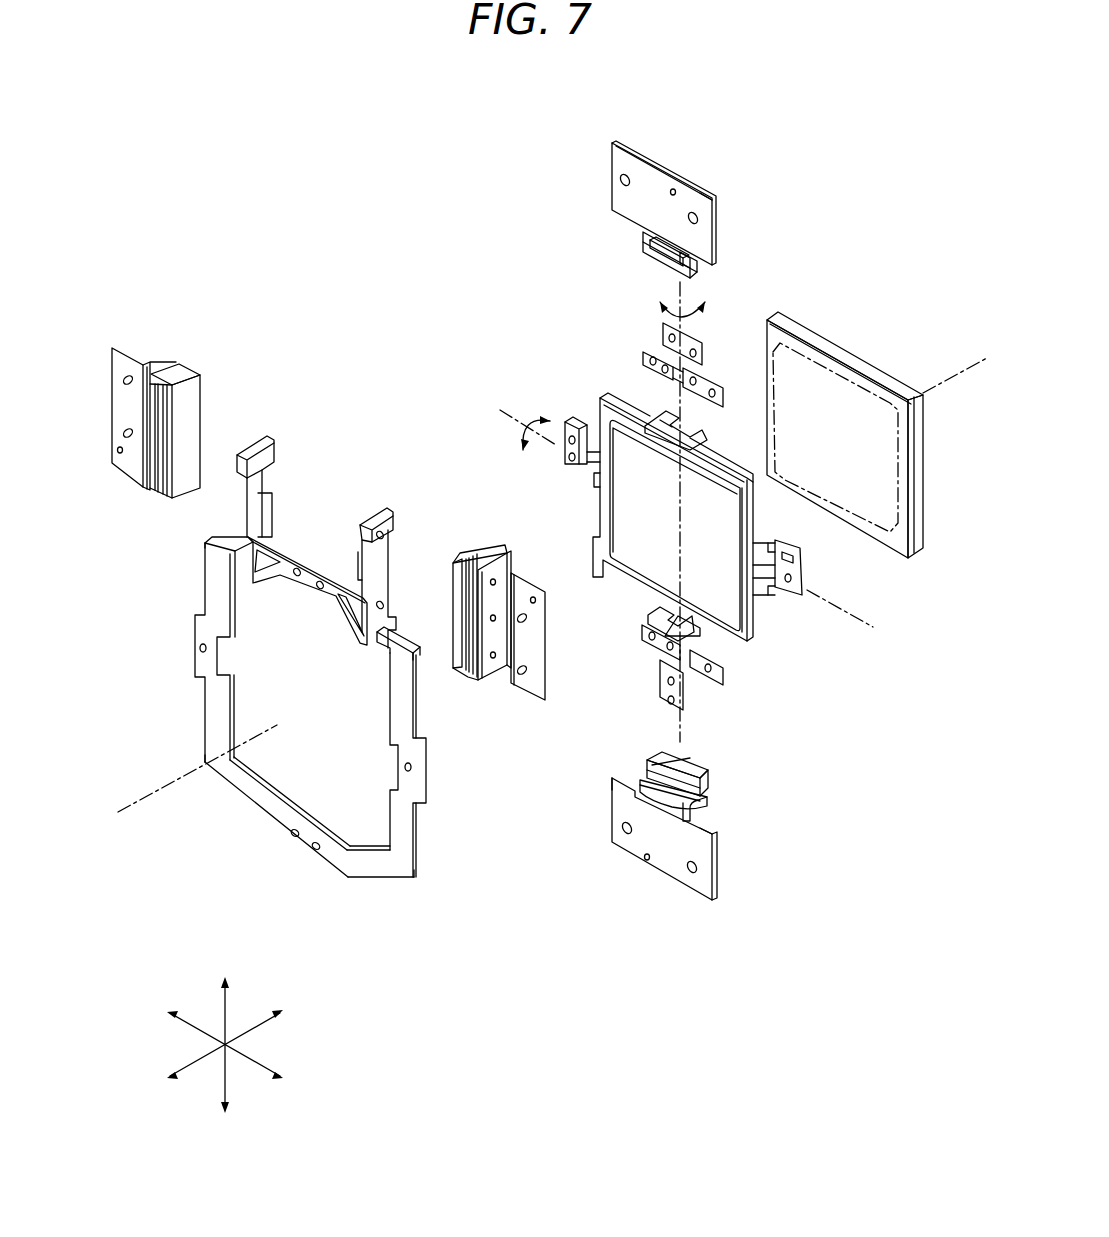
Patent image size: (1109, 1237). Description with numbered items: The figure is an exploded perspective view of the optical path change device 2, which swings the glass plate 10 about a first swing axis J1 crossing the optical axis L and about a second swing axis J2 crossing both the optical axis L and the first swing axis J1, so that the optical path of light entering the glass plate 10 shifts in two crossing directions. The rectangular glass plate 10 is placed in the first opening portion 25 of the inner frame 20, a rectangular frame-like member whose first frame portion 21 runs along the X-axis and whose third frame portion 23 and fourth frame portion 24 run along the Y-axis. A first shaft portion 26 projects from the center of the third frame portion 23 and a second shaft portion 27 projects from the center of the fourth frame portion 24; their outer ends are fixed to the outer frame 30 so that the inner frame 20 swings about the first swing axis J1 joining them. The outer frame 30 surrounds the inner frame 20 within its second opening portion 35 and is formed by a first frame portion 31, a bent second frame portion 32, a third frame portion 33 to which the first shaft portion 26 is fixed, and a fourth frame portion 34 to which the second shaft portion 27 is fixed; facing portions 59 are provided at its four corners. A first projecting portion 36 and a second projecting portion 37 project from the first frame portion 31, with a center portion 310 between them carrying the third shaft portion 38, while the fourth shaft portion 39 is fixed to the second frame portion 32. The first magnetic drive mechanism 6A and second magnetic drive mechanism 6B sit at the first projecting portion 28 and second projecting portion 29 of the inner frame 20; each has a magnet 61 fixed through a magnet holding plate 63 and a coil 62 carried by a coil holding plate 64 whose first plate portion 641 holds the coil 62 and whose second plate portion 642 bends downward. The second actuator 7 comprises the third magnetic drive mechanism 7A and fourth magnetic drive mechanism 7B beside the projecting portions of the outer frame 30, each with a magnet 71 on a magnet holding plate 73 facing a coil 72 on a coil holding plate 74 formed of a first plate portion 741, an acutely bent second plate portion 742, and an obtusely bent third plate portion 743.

The optical path change device 2 is at (362, 160).
The second actuator 7 is at (368, 300).
The third magnetic drive mechanism 7A is at (476, 532).
The fourth magnetic drive mechanism 7B is at (202, 363).
The glass plate 10 is at (847, 334).
The inner frame 20 is at (771, 516).
The first frame portion 21 is at (612, 400).
The third frame portion 23 is at (742, 613).
The fourth frame portion 24 is at (602, 498).
The first opening portion 25 is at (612, 533).
The first shaft portion 26 is at (777, 585).
The second shaft portion 27 is at (585, 467).
The first projecting portion 28 is at (695, 424).
The second projecting portion 29 is at (645, 613).
The outer frame 30 is at (435, 780).
The first frame portion 31 is at (380, 647).
The second frame portion 32 is at (357, 872).
The third frame portion 33 is at (400, 827).
The fourth frame portion 34 is at (215, 718).
The second opening portion 35 is at (265, 787).
The first projecting portion 36 is at (385, 553).
The second projecting portion 37 is at (263, 475).
The third shaft portion 38 is at (693, 368).
The fourth shaft portion 39 is at (677, 660).
The facing portions 59 is at (210, 548).
The magnet 61 is at (647, 256).
The coil 62 is at (643, 242).
The magnet holding plate 63 is at (662, 265).
The coil holding plate 64 is at (618, 197).
The first plate portion 641 is at (690, 202).
The second plate portion 642 is at (698, 805).
The first magnetic drive mechanism 6A is at (603, 227).
The second magnetic drive mechanism 6B is at (727, 776).
The magnet 71 is at (160, 497).
The coil 72 is at (153, 460).
The magnet holding plate 73 is at (178, 494).
The coil holding plate 74 is at (128, 460).
The first plate portion 741 is at (148, 412).
The second plate portion 742 is at (158, 370).
The third plate portion 743 is at (121, 352).
The center portion 310 is at (312, 563).
The first swing axis J1 is at (513, 413).
The second swing axis J2 is at (683, 297).
The optical axis L is at (968, 365).